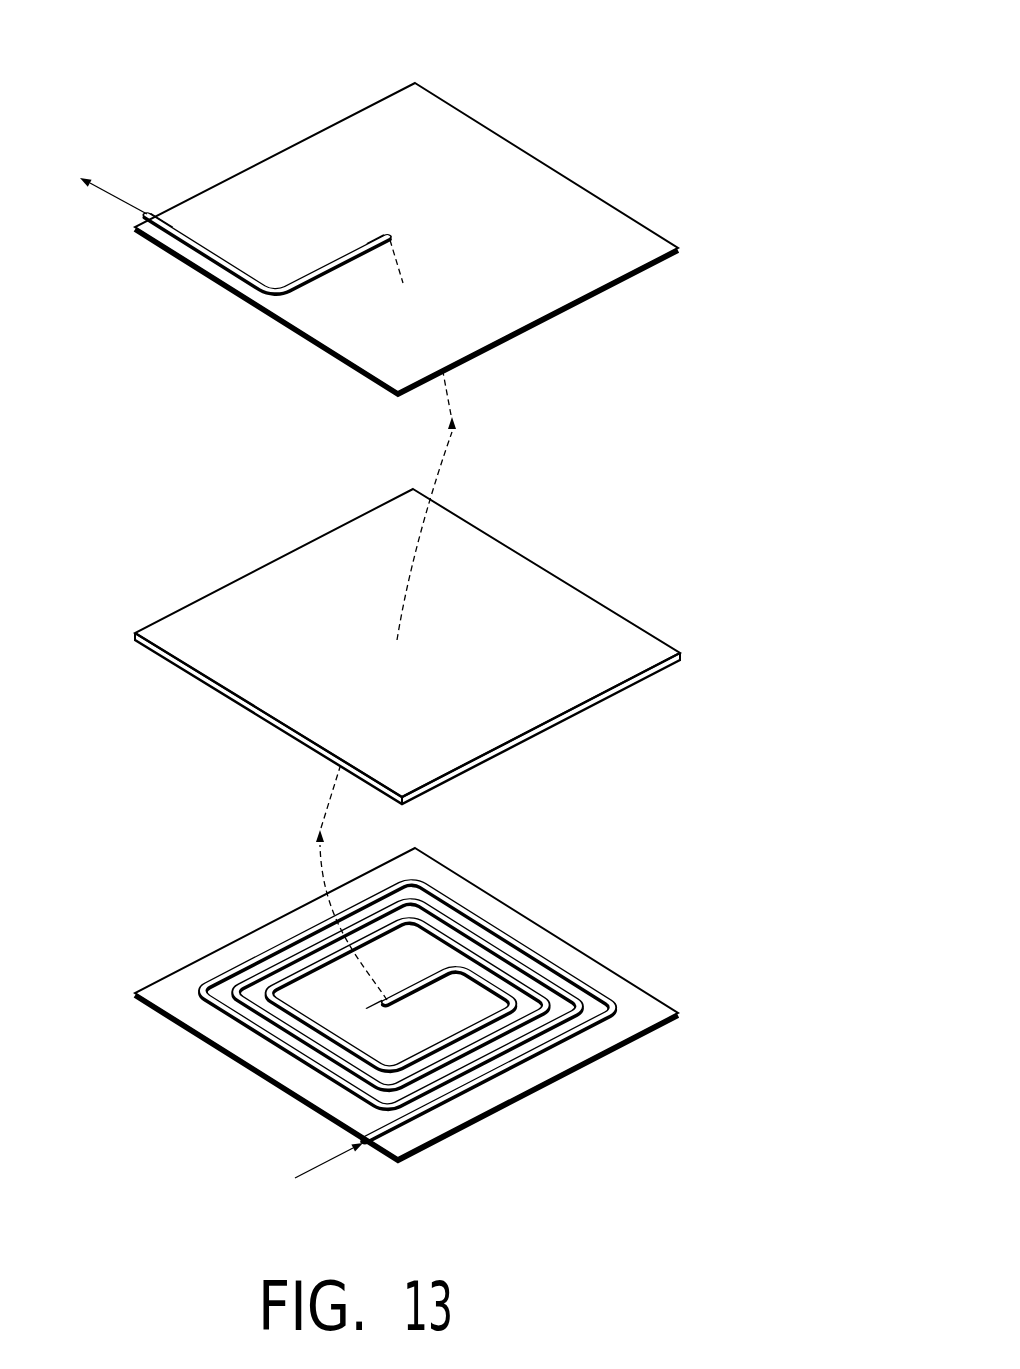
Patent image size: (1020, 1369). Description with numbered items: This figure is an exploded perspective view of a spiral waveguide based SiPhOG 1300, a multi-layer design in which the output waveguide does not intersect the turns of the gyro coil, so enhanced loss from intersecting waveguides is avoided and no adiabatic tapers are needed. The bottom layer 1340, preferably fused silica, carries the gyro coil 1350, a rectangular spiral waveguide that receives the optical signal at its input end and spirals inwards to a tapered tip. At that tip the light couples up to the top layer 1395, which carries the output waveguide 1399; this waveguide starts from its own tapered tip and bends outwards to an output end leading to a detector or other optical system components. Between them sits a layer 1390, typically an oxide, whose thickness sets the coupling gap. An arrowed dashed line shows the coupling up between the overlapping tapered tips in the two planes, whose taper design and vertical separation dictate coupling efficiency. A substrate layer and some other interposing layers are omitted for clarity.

The spiral waveguide based SiPhOG 1300 is at (683, 52).
The layer 1340 is at (660, 1002).
The gyro coil 1350 is at (399, 1009).
The layer 1390 is at (660, 641).
The top layer 1395 is at (660, 237).
The output waveguide 1399 is at (267, 227).